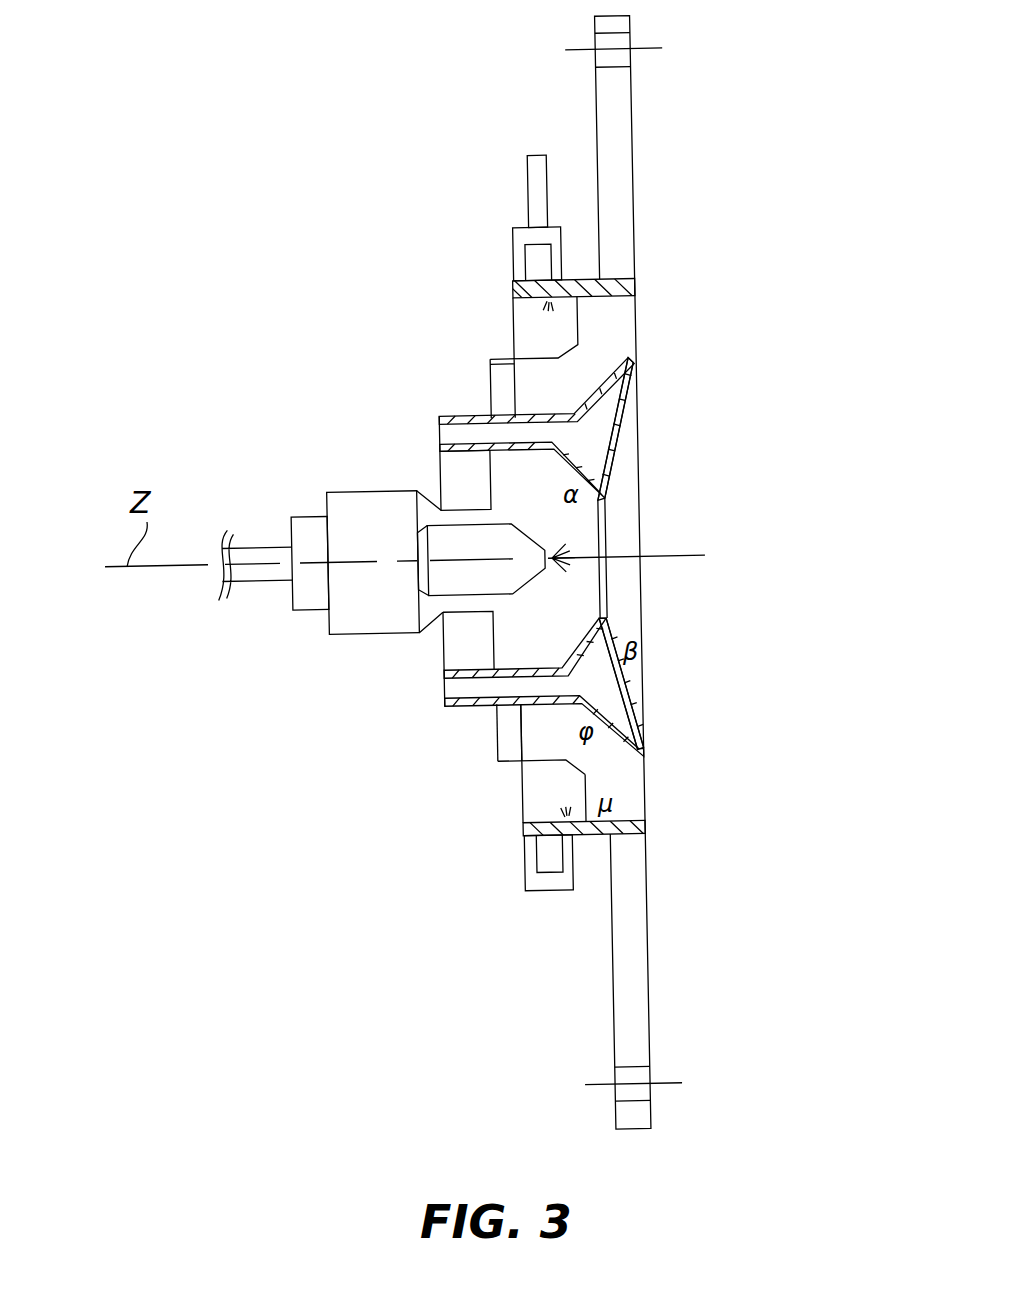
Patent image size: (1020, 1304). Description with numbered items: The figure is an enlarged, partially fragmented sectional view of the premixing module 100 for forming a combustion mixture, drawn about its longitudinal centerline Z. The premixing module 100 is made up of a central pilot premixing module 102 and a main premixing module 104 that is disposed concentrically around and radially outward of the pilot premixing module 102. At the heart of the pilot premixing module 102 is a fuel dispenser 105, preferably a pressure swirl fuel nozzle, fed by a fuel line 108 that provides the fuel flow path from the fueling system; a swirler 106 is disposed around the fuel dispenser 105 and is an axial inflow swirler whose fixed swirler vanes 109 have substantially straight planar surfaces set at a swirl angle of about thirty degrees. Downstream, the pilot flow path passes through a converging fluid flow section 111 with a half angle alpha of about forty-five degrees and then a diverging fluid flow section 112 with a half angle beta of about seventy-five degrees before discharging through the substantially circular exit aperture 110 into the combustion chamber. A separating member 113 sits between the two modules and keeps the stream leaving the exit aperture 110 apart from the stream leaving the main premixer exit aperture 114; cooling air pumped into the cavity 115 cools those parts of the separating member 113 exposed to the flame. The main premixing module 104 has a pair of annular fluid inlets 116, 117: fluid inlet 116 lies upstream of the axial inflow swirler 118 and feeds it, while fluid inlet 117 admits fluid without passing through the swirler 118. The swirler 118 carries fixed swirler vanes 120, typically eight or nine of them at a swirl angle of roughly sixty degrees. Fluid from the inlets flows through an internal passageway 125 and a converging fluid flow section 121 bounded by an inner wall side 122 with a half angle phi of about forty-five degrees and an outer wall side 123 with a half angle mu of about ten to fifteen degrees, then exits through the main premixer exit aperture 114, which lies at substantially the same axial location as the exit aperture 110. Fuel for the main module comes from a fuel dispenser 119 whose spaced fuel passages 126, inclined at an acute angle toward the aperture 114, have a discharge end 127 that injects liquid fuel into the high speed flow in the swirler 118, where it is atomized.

The premixing module 100 is at (174, 402).
The pilot premixing module 102 is at (445, 633).
The main premixing module 104 is at (617, 332).
The fuel dispenser 105 is at (452, 538).
The swirler 106 is at (452, 448).
The fuel line 108 is at (248, 543).
The swirler vanes 109 is at (470, 460).
The exit aperture 110 is at (643, 537).
The converging fluid flow section 111 is at (601, 637).
The diverging fluid flow section 112 is at (622, 460).
The separating member 113 is at (625, 412).
The main premixer exit aperture 114 is at (623, 347).
The cavity 115 is at (607, 446).
The fluid inlet 116 is at (523, 778).
The fluid inlet 117 is at (497, 732).
The swirler 118 is at (513, 323).
The fuel dispenser 119 is at (552, 263).
The swirler vanes 120 is at (562, 346).
The converging fluid flow section 121 is at (632, 295).
The inner wall side 122 is at (608, 738).
The outer wall side 123 is at (620, 817).
The internal passageway 125 is at (607, 372).
The fuel passages 126 is at (525, 833).
The discharge end 127 is at (645, 823).